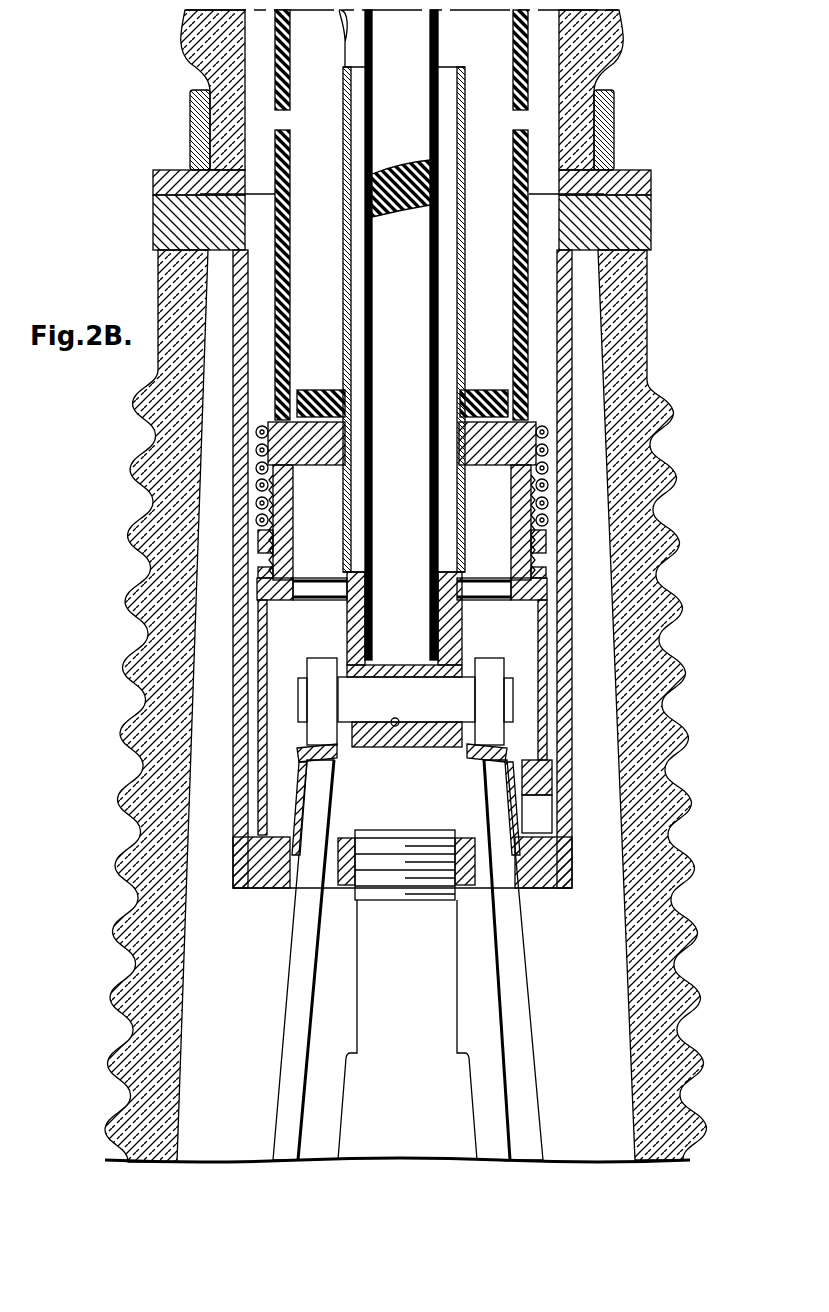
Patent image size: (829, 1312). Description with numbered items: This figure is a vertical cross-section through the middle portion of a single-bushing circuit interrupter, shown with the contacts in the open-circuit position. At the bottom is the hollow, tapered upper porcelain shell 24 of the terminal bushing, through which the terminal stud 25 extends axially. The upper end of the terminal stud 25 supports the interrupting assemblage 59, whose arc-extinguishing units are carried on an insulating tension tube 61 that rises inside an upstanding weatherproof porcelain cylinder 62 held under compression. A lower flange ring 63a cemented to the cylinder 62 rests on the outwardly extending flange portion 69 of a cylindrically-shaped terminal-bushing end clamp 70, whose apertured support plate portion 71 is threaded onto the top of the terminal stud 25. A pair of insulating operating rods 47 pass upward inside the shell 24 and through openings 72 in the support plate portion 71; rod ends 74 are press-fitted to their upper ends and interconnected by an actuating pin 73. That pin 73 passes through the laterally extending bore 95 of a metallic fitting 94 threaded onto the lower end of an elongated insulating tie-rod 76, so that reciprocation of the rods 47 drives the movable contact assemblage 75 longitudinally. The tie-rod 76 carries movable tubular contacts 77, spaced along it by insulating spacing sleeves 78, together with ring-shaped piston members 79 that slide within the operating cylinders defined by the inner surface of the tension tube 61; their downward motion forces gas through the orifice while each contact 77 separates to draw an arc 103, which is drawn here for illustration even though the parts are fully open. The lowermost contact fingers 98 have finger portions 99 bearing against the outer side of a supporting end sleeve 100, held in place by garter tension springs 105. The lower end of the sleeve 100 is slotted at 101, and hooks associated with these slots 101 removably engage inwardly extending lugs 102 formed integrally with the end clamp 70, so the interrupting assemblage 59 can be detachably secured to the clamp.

The upper porcelain shell 24 is at (680, 790).
The terminal stud 25 is at (442, 992).
The insulating operating rods 47 is at (297, 990).
The interrupting assemblage 59 is at (700, 242).
The insulating tension tube 61 is at (528, 368).
The upstanding weatherproof cylinder 62 is at (618, 48).
The lower flange ring 63a is at (153, 180).
The outwardly extending flange portion 69 is at (153, 236).
The terminal-bushing end clamp 70 is at (575, 580).
The apertured support plate portion 71 is at (460, 886).
The openings 72 is at (272, 888).
The actuating pin 73 is at (512, 690).
The rod ends 74 is at (328, 818).
The movable contact assemblage 75 is at (418, 282).
The insulating tie-rod 76 is at (420, 333).
The movable tubular contacts 77 is at (465, 258).
The insulating spacing sleeves 78 is at (437, 227).
The ring-shaped piston members 79 is at (312, 384).
The metallic fitting 94 is at (406, 726).
The laterally extending bore 95 is at (395, 727).
The lowermost contact fingers 98 is at (317, 465).
The finger portions 99 is at (265, 537).
The supporting end sleeve 100 is at (267, 629).
The slots 101 is at (550, 816).
The inwardly extending lugs 102 is at (536, 762).
The arc 103 is at (343, 50).
The garter tension springs 105 is at (546, 428).